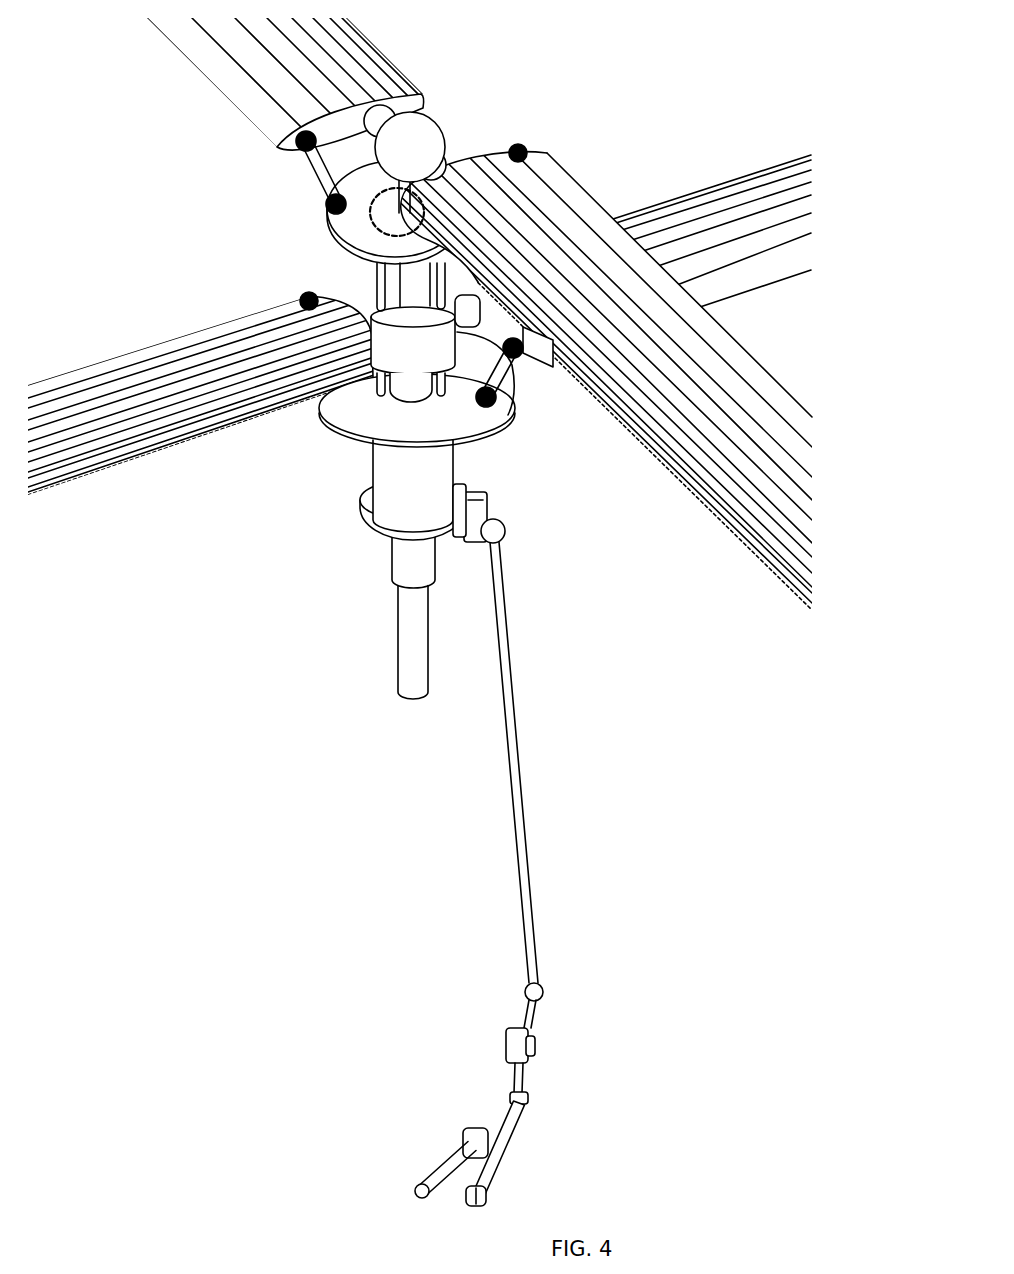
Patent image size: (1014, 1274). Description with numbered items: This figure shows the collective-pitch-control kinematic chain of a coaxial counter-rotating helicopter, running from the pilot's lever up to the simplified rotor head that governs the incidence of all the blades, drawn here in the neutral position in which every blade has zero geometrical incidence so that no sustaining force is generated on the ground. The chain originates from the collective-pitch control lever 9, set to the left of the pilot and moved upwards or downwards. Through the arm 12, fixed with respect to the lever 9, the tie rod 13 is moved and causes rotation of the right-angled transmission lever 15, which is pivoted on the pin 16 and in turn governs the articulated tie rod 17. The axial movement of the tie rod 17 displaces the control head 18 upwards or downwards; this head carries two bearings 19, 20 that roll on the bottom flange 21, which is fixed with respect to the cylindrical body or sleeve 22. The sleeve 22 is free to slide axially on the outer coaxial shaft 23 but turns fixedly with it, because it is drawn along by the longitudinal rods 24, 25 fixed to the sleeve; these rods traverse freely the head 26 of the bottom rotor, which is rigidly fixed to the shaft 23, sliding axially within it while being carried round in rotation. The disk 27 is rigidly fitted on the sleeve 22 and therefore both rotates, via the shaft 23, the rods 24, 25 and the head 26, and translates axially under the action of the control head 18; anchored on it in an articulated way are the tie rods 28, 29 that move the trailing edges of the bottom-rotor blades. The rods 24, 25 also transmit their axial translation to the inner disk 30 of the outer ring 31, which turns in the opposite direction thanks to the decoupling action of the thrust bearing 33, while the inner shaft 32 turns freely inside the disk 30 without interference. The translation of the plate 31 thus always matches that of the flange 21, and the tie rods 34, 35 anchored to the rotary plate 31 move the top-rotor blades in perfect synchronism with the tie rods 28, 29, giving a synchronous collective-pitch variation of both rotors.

The collective-pitch control lever 9 is at (424, 1183).
The arm 12 is at (468, 1176).
The tie rod 13 is at (503, 1147).
The right-angled transmission lever 15 is at (525, 1073).
The pin 16 is at (507, 1042).
The articulated tie rod 17 is at (524, 750).
The control head 18 is at (488, 515).
The bearing 19 is at (464, 490).
The bearing 20 is at (463, 541).
The bottom flange 21 is at (379, 533).
The cylindrical body (sleeve) 22 is at (372, 478).
The outer coaxial shaft 23 is at (392, 572).
The longitudinal rod 24 is at (382, 392).
The longitudinal rod 25 is at (442, 393).
The head of the bottom rotor 26 is at (372, 310).
The disk 27 is at (341, 418).
The articulated tie rod 28 is at (305, 297).
The articulated tie rod 29 is at (513, 360).
The inner disk 30 is at (384, 206).
The outer ring (rotary plate) 31 is at (344, 240).
The inner shaft 32 is at (416, 313).
The thrust bearing 33 is at (346, 212).
The articulated tie rod 34 is at (302, 170).
The articulated tie rod 35 is at (521, 150).